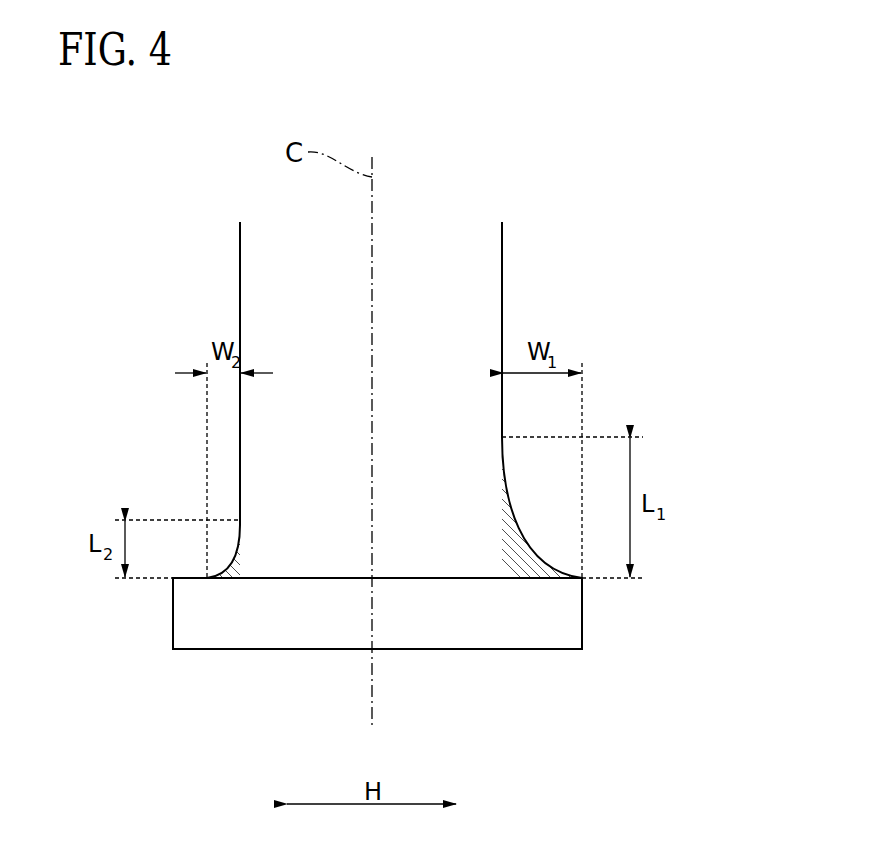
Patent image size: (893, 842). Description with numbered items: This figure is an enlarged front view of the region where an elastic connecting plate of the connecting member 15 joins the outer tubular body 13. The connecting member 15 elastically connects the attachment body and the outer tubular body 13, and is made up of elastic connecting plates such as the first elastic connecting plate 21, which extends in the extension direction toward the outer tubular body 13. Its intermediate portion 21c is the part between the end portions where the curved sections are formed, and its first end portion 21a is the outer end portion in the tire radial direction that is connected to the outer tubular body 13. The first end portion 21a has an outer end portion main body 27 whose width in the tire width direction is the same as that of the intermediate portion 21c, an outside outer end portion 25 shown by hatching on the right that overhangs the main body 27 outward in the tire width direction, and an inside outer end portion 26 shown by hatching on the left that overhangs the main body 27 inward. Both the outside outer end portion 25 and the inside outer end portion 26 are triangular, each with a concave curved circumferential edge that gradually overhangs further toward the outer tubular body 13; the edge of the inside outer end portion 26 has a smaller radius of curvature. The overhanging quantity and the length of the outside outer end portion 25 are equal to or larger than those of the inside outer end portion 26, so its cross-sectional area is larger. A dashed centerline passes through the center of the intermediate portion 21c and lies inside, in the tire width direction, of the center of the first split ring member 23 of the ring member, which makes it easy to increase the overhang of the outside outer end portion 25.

The connecting member 15 is at (640, 142).
The first elastic connecting plate 21 is at (443, 192).
The intermediate portion 21c is at (475, 264).
The first end portion 21a is at (430, 555).
The outside outer end portion 25 is at (533, 550).
The inside outer end portion 26 is at (232, 565).
The outer tubular body 13 is at (596, 612).
The first split ring member 23 is at (258, 662).
The outer end portion main body 27 is at (322, 555).